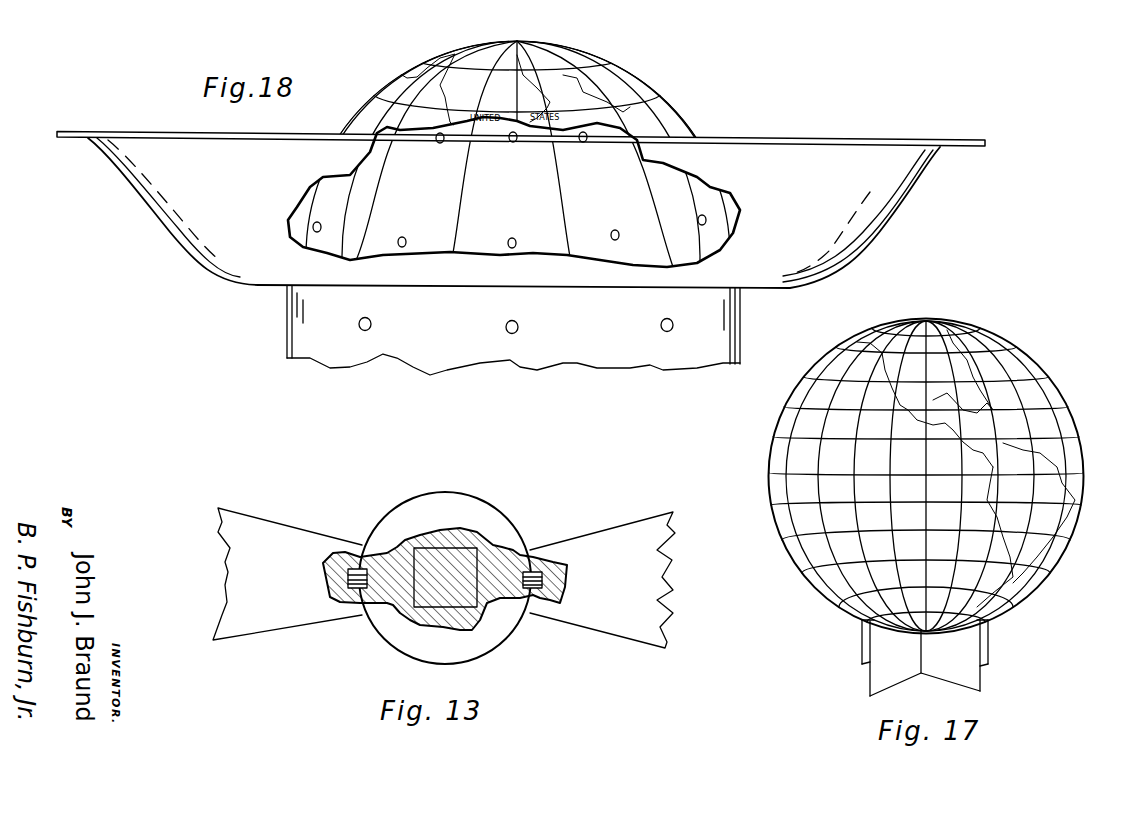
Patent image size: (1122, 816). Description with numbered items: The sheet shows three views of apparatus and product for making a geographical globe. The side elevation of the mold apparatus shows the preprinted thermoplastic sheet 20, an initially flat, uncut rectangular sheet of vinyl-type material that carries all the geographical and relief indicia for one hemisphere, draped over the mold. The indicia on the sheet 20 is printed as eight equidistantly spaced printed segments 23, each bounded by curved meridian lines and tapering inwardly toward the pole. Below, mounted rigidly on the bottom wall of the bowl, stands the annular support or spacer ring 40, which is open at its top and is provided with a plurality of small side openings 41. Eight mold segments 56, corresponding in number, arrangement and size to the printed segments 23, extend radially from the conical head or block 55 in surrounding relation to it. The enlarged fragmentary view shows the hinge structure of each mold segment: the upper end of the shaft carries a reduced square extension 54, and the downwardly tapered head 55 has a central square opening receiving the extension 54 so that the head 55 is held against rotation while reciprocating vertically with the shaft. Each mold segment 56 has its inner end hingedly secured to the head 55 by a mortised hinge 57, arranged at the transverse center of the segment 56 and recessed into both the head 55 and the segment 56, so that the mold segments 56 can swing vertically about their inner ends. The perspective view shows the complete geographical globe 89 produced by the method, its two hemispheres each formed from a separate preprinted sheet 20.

In FIG. 18, the sheet of thermoplastic material 20 is at (773, 167).
In FIG. 18, the printed segments 23 is at (582, 110).
In FIG. 18, the mold segments 56 is at (340, 220).
In FIG. 13, the mold segments 56 is at (278, 552).
In FIG. 18, the annular support or spacer ring 40 is at (437, 333).
In FIG. 18, the side openings 41 is at (371, 320).
In FIG. 13, the square extension 54 is at (427, 562).
In FIG. 13, the conical head or block 55 is at (483, 517).
In FIG. 13, the mortised hinge 57 is at (533, 557).
In FIG. 17, the geographical globe 89 is at (1036, 352).